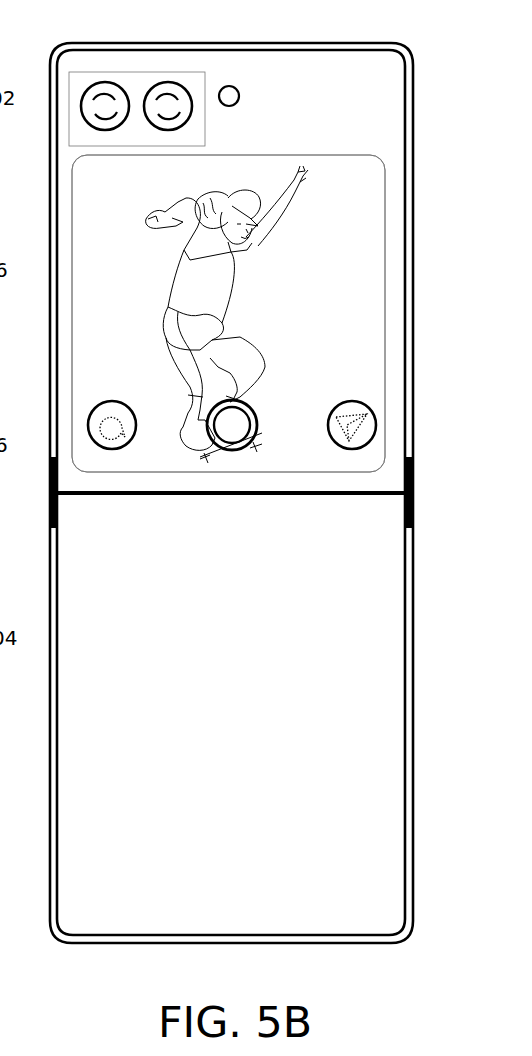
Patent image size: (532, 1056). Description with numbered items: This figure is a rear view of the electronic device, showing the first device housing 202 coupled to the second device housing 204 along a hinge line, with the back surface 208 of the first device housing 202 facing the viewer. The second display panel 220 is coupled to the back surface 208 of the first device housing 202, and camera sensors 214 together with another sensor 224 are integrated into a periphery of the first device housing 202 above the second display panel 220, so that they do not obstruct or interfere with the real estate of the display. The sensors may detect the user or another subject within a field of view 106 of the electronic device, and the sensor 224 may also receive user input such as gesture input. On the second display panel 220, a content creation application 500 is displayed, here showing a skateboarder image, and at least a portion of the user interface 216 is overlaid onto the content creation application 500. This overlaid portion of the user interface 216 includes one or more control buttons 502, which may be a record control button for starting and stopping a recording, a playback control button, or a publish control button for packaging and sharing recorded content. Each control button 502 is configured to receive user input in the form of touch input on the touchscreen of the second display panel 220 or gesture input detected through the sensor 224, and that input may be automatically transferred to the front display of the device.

The first device housing 202 is at (388, 96).
The second device housing 204 is at (385, 641).
The field of view 106 is at (363, 281).
The back surface 208 is at (197, 109).
The camera sensors 214 is at (166, 92).
The sensor 224 is at (232, 90).
The second display panel 220 is at (228, 313).
The user interface 216 is at (85, 405).
The content creation application 500 is at (273, 244).
The control buttons 502 is at (353, 410).